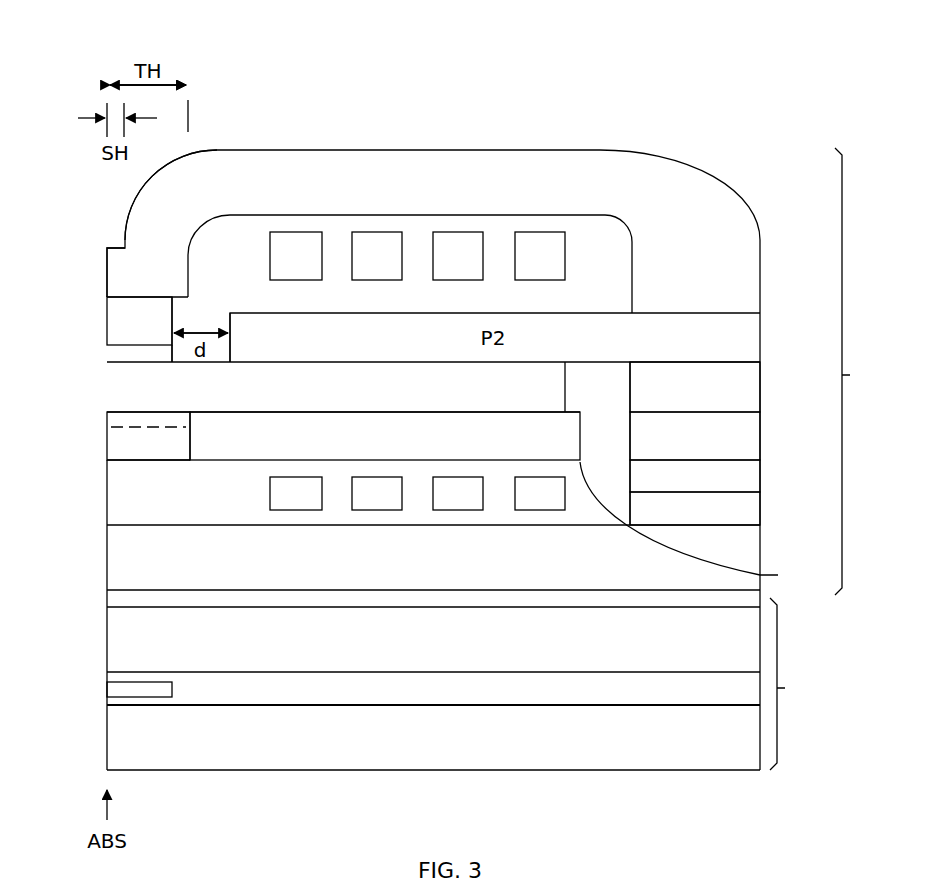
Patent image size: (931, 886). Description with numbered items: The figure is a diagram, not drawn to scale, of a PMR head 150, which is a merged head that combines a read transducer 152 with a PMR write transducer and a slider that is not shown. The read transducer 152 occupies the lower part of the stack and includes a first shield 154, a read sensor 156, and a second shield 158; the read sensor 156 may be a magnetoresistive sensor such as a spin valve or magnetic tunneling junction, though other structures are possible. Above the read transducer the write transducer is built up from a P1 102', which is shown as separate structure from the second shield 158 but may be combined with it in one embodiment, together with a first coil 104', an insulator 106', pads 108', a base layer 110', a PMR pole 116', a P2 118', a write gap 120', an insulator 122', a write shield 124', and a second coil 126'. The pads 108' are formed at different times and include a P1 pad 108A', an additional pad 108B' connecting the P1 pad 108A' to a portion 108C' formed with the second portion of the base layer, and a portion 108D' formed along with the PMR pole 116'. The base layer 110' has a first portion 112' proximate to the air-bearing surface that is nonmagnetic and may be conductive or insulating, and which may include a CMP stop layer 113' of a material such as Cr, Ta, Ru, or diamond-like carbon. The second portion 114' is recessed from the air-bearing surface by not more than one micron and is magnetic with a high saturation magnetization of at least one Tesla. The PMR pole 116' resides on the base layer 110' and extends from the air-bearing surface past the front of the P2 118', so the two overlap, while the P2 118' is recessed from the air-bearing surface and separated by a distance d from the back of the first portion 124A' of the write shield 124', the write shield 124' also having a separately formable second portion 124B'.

The PMR head 150 is at (436, 29).
The read transducer 152 is at (826, 459).
The first shield 154 is at (140, 770).
The read sensor 156 is at (107, 688).
The second shield 158 is at (107, 640).
The P1 102' is at (472, 647).
The first coil 104' is at (406, 559).
The insulator 106' is at (310, 508).
The pads 108' is at (734, 437).
The P1 pad 108A' is at (731, 525).
The additional pad 108B' is at (731, 487).
The pad portion formed with second portion of base layer 108C' is at (731, 440).
The pad portion formed with PMR pole 108D' is at (732, 348).
The base layer 110' is at (123, 436).
The first portion of base layer 112' is at (114, 479).
The CMP stop layer 113' is at (309, 423).
The second portion of base layer 114' is at (709, 525).
The PMR pole 116' is at (399, 384).
The P2 118' is at (511, 258).
The write gap 120' is at (113, 329).
The insulator 122' is at (413, 226).
The write shield 124' is at (433, 198).
The first portion of write shield 124A' is at (113, 270).
The second portion of write shield 124B' is at (123, 195).
The second coil 126' is at (479, 200).